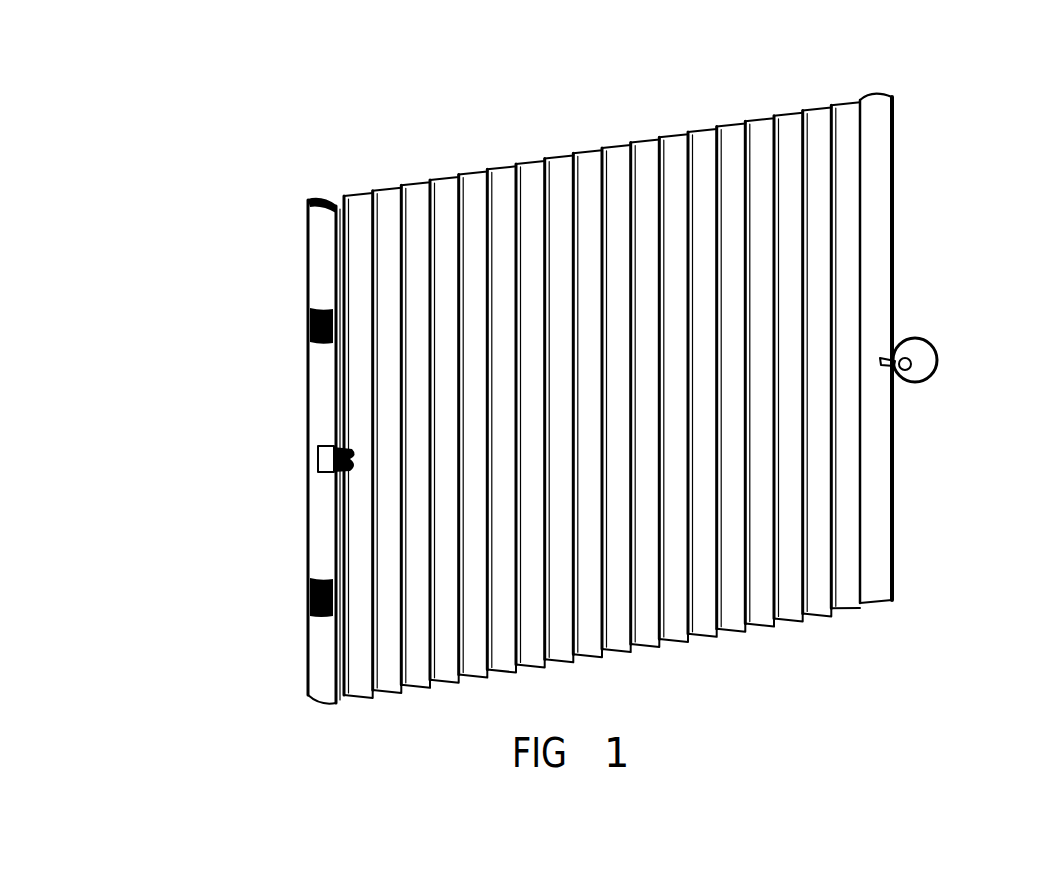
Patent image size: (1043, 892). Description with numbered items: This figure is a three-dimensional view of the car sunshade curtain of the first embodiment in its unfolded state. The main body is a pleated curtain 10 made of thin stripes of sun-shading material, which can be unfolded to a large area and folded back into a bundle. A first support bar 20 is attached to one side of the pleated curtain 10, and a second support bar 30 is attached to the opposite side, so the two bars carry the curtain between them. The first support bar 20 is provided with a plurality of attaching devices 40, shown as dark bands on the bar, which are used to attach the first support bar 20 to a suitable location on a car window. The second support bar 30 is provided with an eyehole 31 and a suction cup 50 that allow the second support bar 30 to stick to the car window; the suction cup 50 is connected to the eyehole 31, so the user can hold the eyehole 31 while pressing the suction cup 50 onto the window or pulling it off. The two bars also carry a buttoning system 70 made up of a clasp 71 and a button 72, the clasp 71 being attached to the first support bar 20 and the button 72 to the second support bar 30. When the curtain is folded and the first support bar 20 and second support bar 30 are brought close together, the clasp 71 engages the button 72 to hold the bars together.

The pleated curtain 10 is at (558, 180).
The first support bar 20 is at (316, 230).
The second support bar 30 is at (893, 227).
The attaching devices 40 is at (293, 320).
The buttoning system 70 is at (296, 455).
The clasp 71 is at (318, 472).
The button 72 is at (890, 342).
The suction cup 50 is at (937, 345).
The eyehole 31 is at (915, 383).